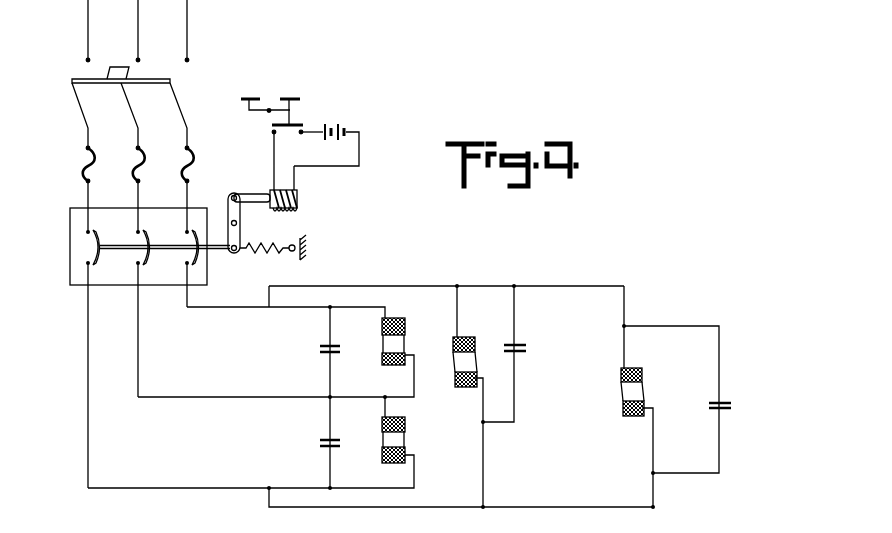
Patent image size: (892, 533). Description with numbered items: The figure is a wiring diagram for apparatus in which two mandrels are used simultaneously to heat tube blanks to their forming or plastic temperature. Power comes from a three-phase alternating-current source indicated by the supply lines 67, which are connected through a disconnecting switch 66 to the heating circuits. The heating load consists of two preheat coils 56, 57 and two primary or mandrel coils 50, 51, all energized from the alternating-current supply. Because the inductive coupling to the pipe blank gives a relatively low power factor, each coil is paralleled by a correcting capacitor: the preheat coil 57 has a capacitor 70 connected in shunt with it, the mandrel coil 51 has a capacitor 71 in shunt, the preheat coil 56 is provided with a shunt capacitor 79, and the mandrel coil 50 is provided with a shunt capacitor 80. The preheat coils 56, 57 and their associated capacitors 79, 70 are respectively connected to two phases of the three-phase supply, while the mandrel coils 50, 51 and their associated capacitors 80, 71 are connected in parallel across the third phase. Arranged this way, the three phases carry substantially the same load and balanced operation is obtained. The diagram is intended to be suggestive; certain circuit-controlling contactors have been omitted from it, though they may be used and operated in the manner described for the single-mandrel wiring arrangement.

The disconnecting switch 66 is at (82, 81).
The supply lines 67 is at (197, 17).
The capacitor 70 is at (319, 350).
The shunt capacitor 79 is at (319, 442).
The preheat coil 57 is at (400, 344).
The preheat coil 56 is at (400, 446).
The mandrel coil 50 is at (473, 362).
The shunt capacitor 80 is at (528, 349).
The mandrel coil 51 is at (637, 395).
The capacitor 71 is at (733, 408).